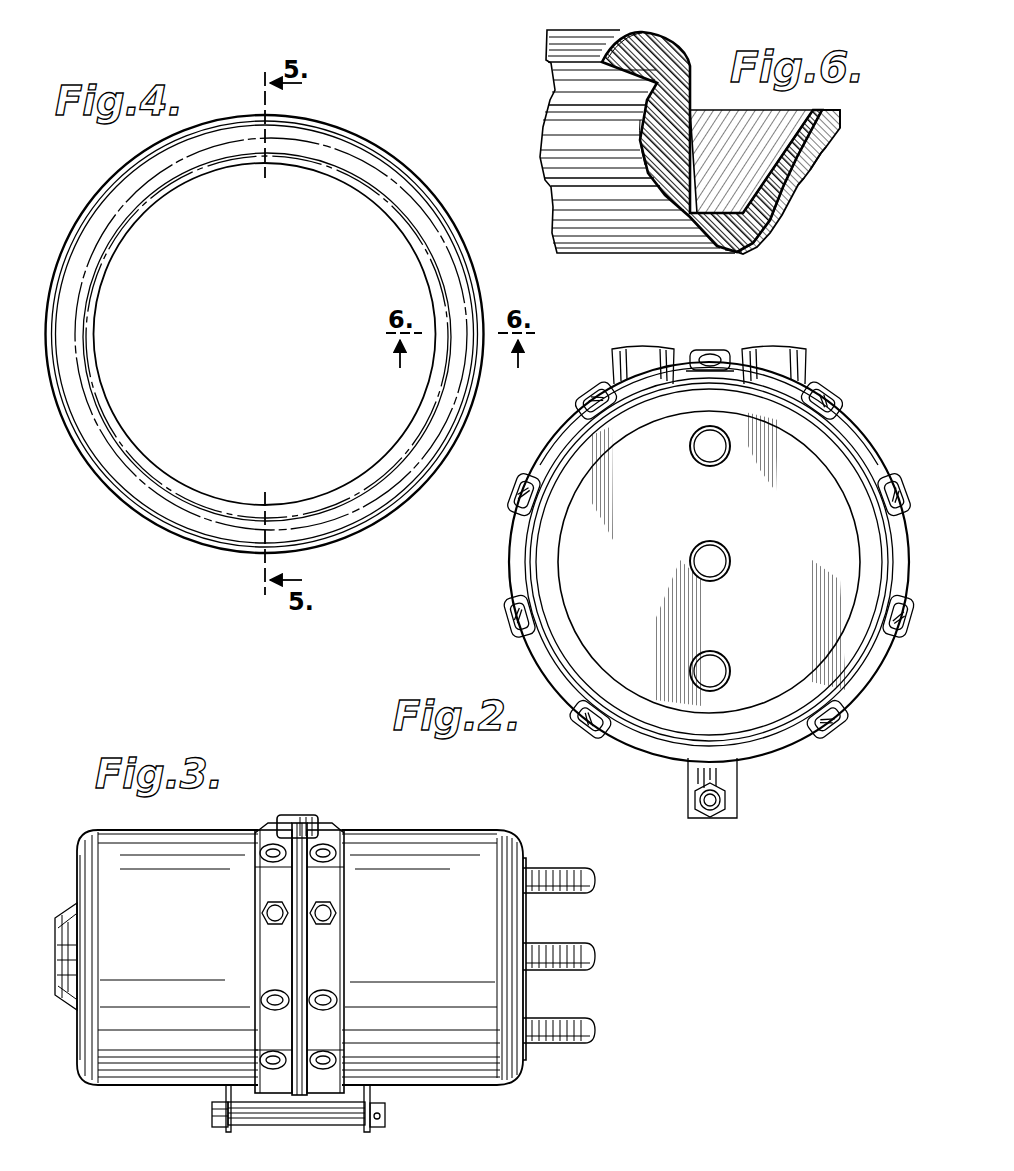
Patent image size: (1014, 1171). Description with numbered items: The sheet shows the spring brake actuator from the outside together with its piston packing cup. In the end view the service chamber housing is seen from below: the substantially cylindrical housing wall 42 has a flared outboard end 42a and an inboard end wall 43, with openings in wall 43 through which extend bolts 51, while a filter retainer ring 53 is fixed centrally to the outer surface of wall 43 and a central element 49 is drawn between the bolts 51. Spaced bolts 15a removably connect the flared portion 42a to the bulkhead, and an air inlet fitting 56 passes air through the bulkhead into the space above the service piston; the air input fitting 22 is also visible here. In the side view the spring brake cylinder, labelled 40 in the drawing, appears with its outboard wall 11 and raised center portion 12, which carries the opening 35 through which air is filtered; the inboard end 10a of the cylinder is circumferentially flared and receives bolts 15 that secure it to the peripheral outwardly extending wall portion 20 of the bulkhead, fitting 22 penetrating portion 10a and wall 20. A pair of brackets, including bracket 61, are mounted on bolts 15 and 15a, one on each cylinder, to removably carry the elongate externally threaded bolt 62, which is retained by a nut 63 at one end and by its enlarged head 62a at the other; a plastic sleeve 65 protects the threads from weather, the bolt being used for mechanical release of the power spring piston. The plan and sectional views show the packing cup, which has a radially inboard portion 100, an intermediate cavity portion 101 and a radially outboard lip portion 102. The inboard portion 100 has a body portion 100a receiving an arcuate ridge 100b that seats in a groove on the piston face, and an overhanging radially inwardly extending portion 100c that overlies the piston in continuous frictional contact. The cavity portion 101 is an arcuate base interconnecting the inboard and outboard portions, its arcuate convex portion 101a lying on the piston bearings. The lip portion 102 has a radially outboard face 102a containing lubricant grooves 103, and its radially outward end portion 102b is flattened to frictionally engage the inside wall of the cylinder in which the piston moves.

In FIG. 3, the inboard end 10a is at (268, 893).
In FIG. 3, the outboard wall 11 is at (77, 872).
In FIG. 3, the raised center portion 12 is at (55, 955).
In FIG. 3, the bolts 15 is at (266, 1008).
In FIG. 2, the bolts 15a is at (518, 502).
In FIG. 3, the bolts 15a is at (333, 916).
In FIG. 3, the peripheral outwardly extending wall portion 20 is at (300, 962).
In FIG. 2, the air input fitting 22 is at (617, 360).
In FIG. 3, the air input fitting 22 is at (313, 818).
In FIG. 3, the opening 35 is at (72, 956).
In FIG. 3, the housing section 40 is at (198, 833).
In FIG. 2, the housing wall 42 is at (656, 724).
In FIG. 3, the housing wall 42 is at (442, 833).
In FIG. 2, the flared outboard end 42a is at (550, 650).
In FIG. 3, the flared outboard end 42a is at (330, 979).
In FIG. 2, the inboard end wall 43 is at (534, 575).
In FIG. 3, the inboard end wall 43 is at (524, 1068).
In FIG. 2, the central pipe connector 49 is at (724, 561).
In FIG. 3, the central pipe connector 49 is at (594, 952).
In FIG. 2, the bolts 51 is at (710, 452).
In FIG. 3, the bolts 51 is at (594, 877).
In FIG. 2, the filter retainer ring 53 is at (709, 562).
In FIG. 3, the filter retainer ring 53 is at (526, 864).
In FIG. 2, the air inlet fitting 56 is at (800, 362).
In FIG. 3, the bracket 61 is at (372, 1098).
In FIG. 2, the elongate externally threaded bolt 62 is at (698, 802).
In FIG. 3, the enlarged head 62a is at (211, 1118).
In FIG. 2, the nut 63 is at (712, 814).
In FIG. 3, the nut 63 is at (387, 1128).
In FIG. 3, the plastic sleeve 65 is at (292, 1126).
In FIG. 4, the radially inboard portion 100 is at (449, 268).
In FIG. 6, the radially inboard portion 100 is at (698, 54).
In FIG. 6, the body portion 100a is at (697, 116).
In FIG. 6, the arcuate ridge 100b is at (641, 134).
In FIG. 4, the overhanging radially inwardly extending portion 100c is at (406, 224).
In FIG. 6, the overhanging radially inwardly extending portion 100c is at (656, 31).
In FIG. 4, the intermediate cavity portion 101 is at (394, 186).
In FIG. 6, the intermediate cavity portion 101 is at (752, 256).
In FIG. 6, the arcuate convex portion 101a is at (741, 255).
In FIG. 4, the radially outboard lip portion 102 is at (441, 206).
In FIG. 6, the radially outboard lip portion 102 is at (848, 135).
In FIG. 6, the radially outboard face 102a is at (813, 175).
In FIG. 4, the radially outward end portion 102b is at (148, 518).
In FIG. 6, the radially outward end portion 102b is at (843, 114).
In FIG. 6, the lubricant grooves 103 is at (824, 150).